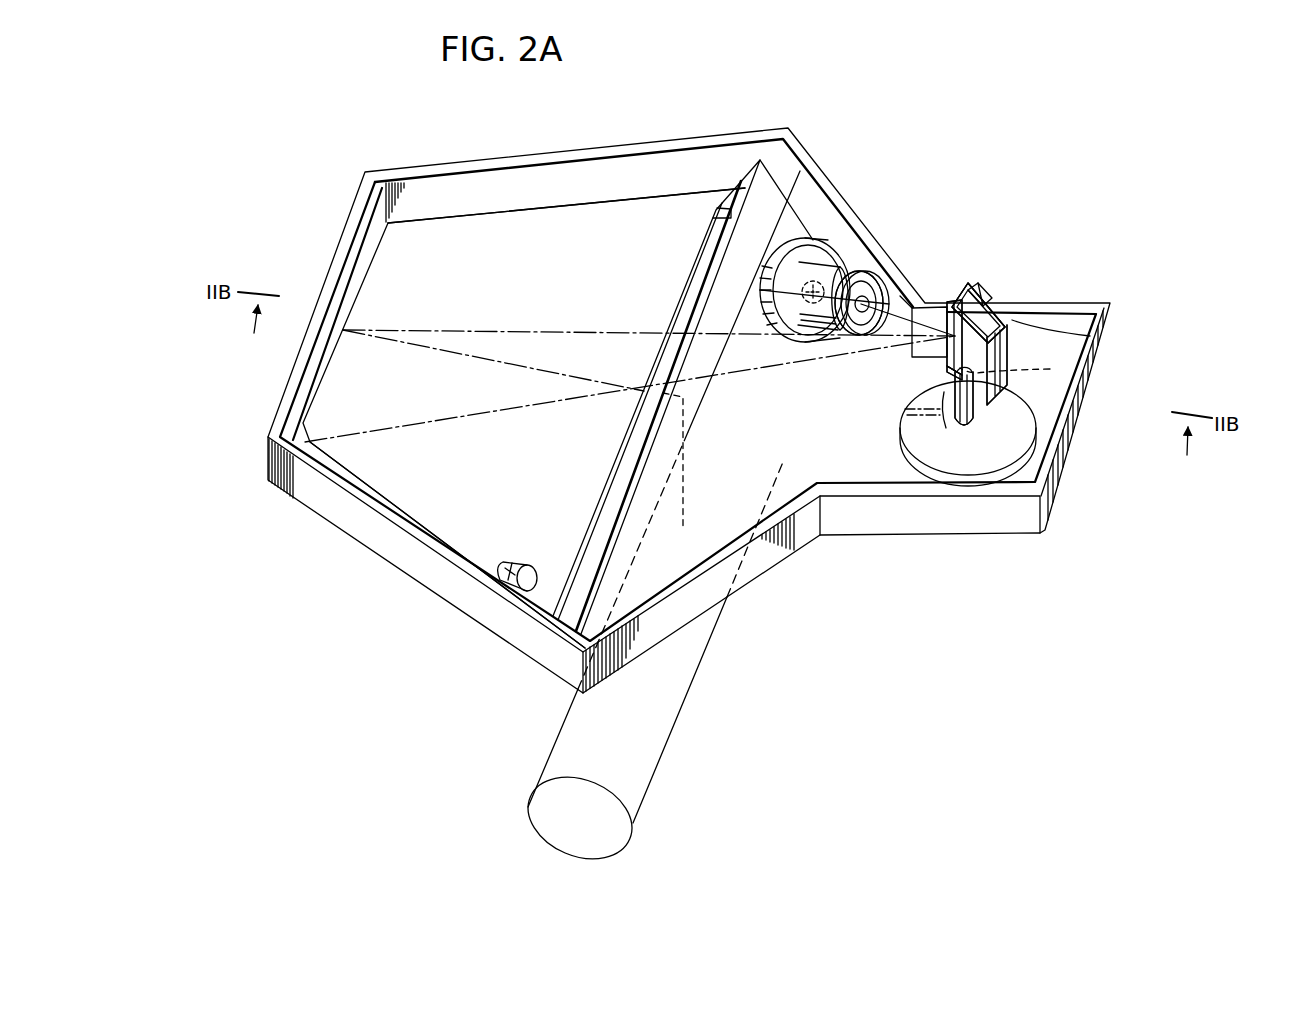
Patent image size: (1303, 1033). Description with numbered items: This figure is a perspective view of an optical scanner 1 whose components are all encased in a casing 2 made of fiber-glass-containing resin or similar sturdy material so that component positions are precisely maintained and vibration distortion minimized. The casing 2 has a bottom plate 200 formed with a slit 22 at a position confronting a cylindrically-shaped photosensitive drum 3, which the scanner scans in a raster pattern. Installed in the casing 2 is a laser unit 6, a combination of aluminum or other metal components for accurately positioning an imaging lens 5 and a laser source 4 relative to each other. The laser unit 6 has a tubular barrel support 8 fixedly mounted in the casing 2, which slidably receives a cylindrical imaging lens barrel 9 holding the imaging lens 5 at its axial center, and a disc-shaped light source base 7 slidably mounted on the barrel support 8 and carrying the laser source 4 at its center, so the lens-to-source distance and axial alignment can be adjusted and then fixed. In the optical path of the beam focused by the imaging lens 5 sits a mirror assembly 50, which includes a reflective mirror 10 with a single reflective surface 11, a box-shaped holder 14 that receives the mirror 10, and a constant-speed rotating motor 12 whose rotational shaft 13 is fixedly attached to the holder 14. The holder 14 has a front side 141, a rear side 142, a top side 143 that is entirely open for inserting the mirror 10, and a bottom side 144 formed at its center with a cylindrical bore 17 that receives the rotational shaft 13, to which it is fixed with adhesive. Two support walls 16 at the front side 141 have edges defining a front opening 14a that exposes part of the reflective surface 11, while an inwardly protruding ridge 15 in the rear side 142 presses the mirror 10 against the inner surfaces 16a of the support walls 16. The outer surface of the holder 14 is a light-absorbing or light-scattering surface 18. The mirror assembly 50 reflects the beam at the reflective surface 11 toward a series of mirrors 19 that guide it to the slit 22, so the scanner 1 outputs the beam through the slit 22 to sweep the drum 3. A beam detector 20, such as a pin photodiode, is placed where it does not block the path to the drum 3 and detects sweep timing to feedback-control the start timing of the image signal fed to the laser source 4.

The optical scanner 1 is at (1018, 603).
The casing 2 is at (1020, 513).
The photosensitive drum 3 is at (625, 746).
The laser source 4 is at (820, 268).
The imaging lens 5 is at (868, 275).
The laser unit 6 is at (923, 157).
The light source base 7 is at (800, 243).
The barrel support 8 is at (804, 261).
The imaging lens barrel 9 is at (861, 297).
The reflective mirror 10 is at (1002, 306).
The reflective surface 11 is at (985, 301).
The constant-speed rotating motor 12 is at (1007, 441).
The rotational shaft 13 is at (978, 418).
The holder 14 is at (1008, 318).
The front opening 14a is at (940, 360).
The ridge 15 is at (993, 292).
The support walls 16 is at (948, 318).
The inner surfaces 16a is at (962, 298).
The cylindrical bore 17 is at (1050, 369).
The light-absorbing or light-scattering surface 18 is at (1012, 325).
The mirrors 19 is at (320, 456).
The beam detector 20 is at (503, 583).
The slit 22 is at (724, 236).
The mirror assembly 50 is at (1050, 200).
The front side 141 is at (912, 366).
The rear side 142 is at (1008, 335).
The top side 143 is at (963, 294).
The bottom side 144 is at (959, 419).
The bottom plate 200 is at (668, 212).